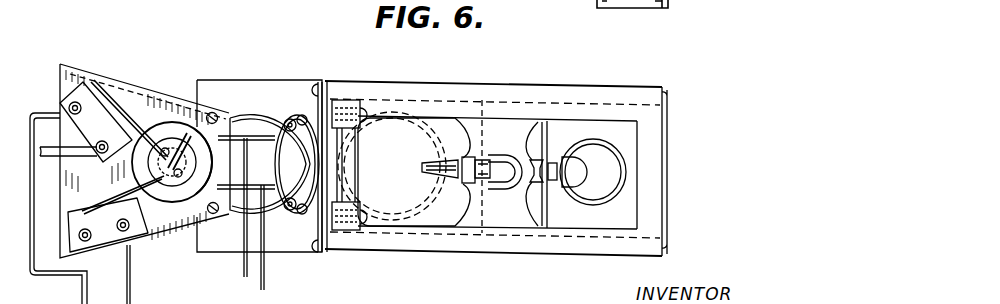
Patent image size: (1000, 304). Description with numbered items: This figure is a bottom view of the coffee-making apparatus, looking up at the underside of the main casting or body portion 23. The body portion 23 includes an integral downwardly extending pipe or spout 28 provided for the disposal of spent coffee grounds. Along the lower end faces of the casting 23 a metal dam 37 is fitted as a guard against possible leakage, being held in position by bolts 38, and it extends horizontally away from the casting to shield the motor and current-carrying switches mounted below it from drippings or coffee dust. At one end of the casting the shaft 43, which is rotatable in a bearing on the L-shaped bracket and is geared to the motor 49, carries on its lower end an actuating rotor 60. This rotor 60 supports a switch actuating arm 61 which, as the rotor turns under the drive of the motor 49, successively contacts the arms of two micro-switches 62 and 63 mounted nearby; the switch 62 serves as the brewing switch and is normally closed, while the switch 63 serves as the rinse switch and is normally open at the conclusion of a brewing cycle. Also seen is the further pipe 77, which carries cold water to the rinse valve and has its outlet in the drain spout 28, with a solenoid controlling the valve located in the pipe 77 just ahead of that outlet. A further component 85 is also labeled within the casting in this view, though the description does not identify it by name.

The body portion 23 is at (567, 85).
The pipe or spout 28 is at (618, 147).
The metal dam 37 is at (668, 184).
The bolt 38 is at (328, 93).
The shaft 43 is at (208, 110).
The motor 49 is at (258, 118).
The actuating rotor 60 is at (165, 148).
The switch actuating arm 61 is at (183, 132).
The micro-switch 62 is at (91, 82).
The micro-switch 63 is at (107, 228).
The pipe 77 is at (530, 182).
The lamp 85 is at (440, 173).